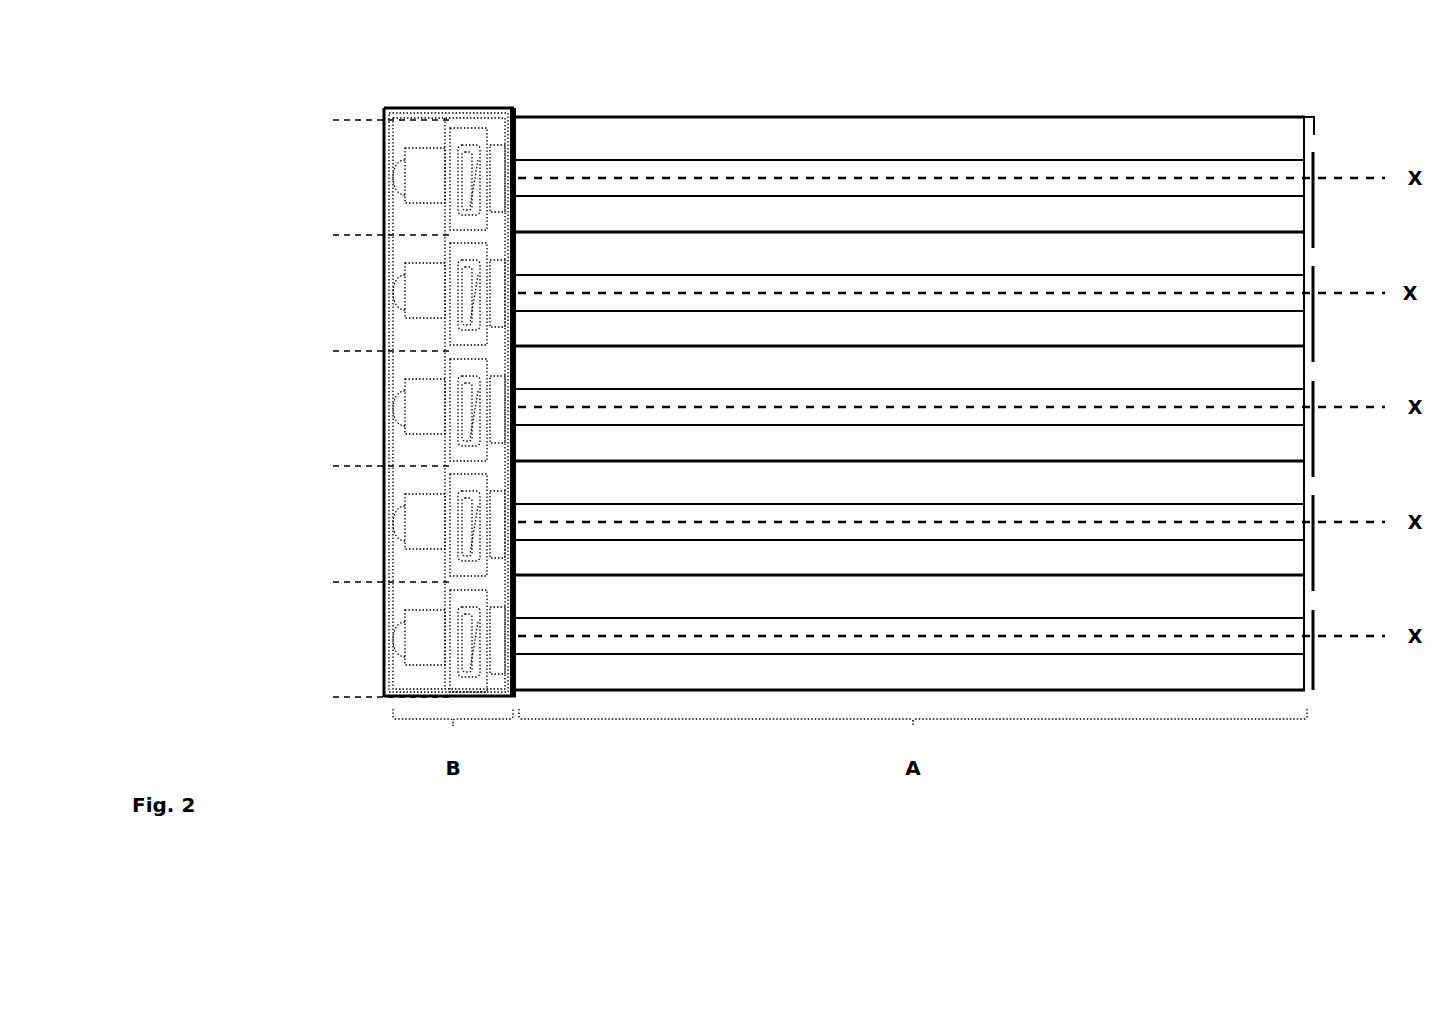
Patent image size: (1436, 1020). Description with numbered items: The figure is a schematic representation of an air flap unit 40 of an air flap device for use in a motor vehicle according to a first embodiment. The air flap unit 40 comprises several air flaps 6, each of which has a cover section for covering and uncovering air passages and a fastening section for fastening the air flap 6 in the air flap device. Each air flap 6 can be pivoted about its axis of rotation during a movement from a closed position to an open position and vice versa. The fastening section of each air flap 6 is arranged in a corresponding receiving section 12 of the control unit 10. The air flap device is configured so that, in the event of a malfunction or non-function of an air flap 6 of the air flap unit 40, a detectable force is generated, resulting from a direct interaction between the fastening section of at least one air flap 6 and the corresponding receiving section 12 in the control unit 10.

The control unit 10 is at (398, 107).
The receiving section 12 is at (355, 408).
The air flap 6 is at (1360, 146).
The air flap unit 40 is at (1343, 731).